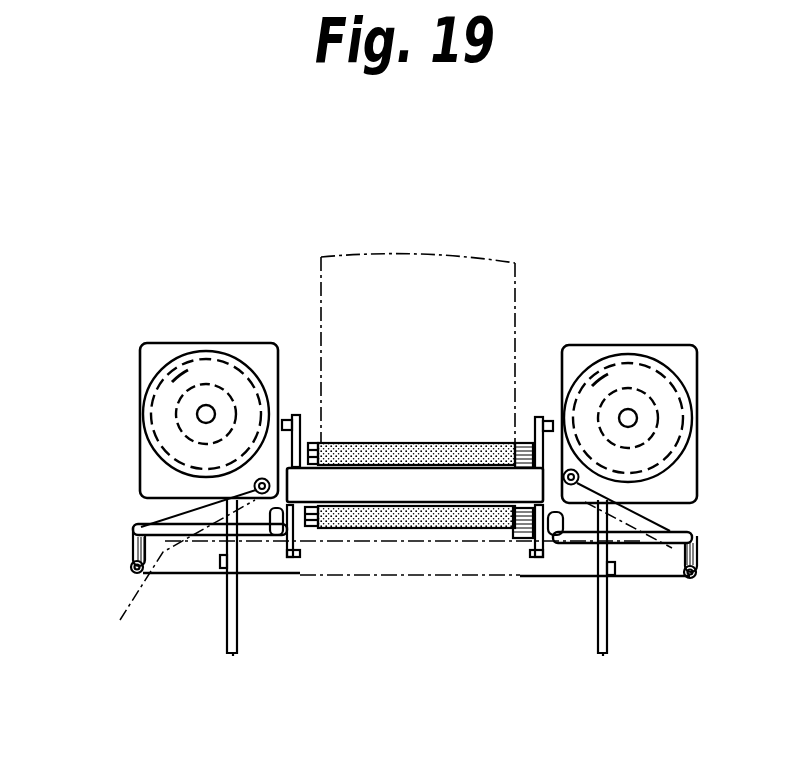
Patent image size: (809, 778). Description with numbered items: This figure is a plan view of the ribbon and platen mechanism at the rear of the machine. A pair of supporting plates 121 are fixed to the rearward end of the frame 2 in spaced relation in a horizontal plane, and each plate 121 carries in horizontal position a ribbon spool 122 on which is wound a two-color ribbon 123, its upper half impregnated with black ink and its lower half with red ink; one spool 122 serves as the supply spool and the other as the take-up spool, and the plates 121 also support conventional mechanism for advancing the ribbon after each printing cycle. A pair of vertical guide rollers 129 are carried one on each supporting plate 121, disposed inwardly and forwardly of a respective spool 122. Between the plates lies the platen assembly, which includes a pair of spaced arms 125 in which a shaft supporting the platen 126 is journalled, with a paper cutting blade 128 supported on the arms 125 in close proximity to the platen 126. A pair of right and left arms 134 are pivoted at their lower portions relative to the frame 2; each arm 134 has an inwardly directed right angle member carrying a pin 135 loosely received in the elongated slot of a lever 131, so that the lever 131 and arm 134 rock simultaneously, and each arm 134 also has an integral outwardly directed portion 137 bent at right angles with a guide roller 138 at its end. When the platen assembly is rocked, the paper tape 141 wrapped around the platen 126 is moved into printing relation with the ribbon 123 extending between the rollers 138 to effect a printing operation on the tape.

The paper tape 141 is at (428, 272).
The supporting plate 121 is at (158, 351).
The ribbon spool 122 is at (235, 360).
The vertical guide roller 129 is at (256, 483).
The arm 125 is at (300, 416).
The platen 126 is at (467, 450).
The paper cutting blade 128 is at (385, 480).
The lever 131 is at (537, 555).
The pin 135 is at (268, 540).
The outwardly directed portion 137 is at (135, 524).
The guide roller 138 is at (138, 550).
The two-color ribbon 123 is at (167, 566).
The arm 134 is at (222, 582).
The frame 2 is at (233, 654).